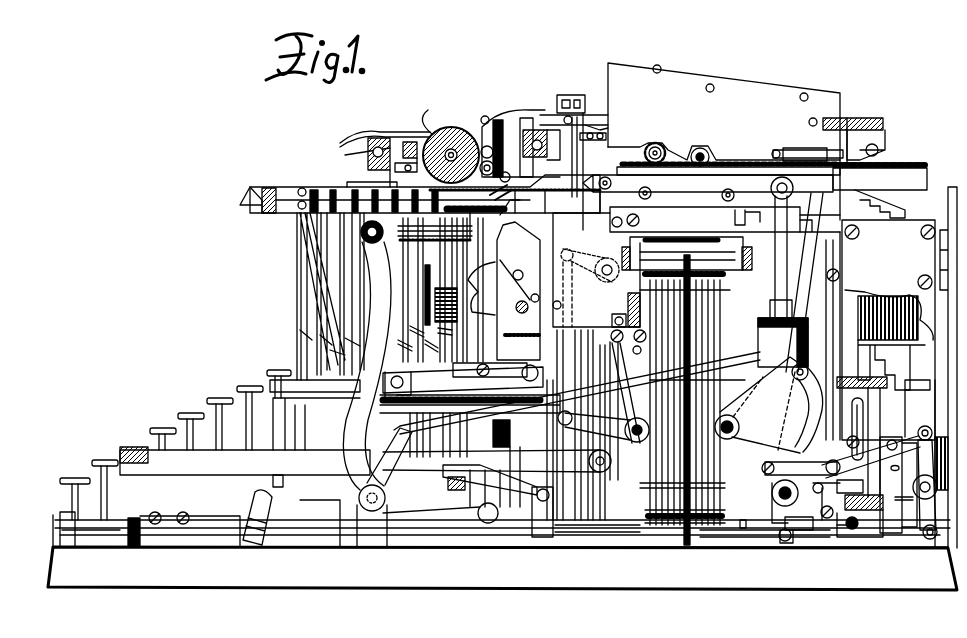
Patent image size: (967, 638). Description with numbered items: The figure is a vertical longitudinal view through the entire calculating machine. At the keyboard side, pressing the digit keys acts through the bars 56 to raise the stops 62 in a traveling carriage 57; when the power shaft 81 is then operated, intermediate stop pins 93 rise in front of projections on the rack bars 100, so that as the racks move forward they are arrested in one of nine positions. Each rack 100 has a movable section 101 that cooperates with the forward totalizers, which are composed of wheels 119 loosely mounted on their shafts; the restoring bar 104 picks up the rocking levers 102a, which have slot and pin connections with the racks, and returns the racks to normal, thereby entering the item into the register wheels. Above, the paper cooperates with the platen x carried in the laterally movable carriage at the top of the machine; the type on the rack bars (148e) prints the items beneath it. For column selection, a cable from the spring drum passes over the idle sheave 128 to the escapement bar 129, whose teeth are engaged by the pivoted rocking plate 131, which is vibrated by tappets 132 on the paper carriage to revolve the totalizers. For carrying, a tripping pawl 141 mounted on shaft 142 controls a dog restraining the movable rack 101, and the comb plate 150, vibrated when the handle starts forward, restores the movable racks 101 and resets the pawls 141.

The platen x is at (451, 127).
The tappets 132 is at (568, 95).
The escapement bar 129 is at (592, 128).
The idle sheave 128 is at (600, 138).
The pivoted rocking plate 131 is at (583, 168).
The totalizer wheels 119 is at (662, 150).
The tripping pawl 141 is at (700, 148).
The shaft 142 is at (773, 153).
The movable rack section 101 is at (653, 169).
The comb plate 150 is at (628, 176).
The rack bars 100 is at (880, 191).
The restoring bar 104 is at (797, 247).
The intermediate stop pins 93 is at (686, 230).
The traveling carriage 57 is at (691, 255).
The stops 62 is at (720, 283).
The bars 56 is at (703, 333).
The rocking levers 102a is at (820, 243).
The power shaft 81 is at (733, 440).
The plate 148e is at (518, 280).